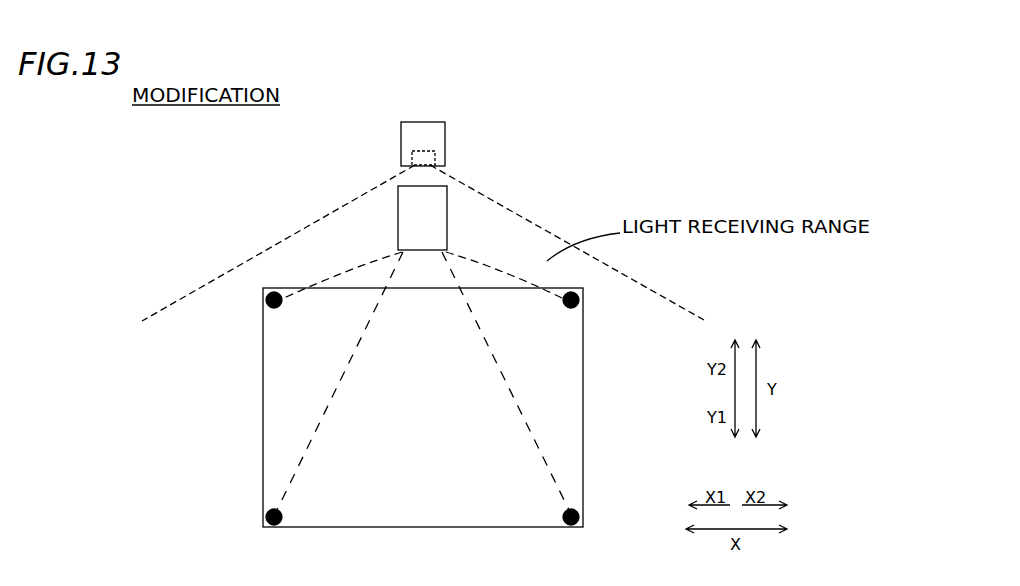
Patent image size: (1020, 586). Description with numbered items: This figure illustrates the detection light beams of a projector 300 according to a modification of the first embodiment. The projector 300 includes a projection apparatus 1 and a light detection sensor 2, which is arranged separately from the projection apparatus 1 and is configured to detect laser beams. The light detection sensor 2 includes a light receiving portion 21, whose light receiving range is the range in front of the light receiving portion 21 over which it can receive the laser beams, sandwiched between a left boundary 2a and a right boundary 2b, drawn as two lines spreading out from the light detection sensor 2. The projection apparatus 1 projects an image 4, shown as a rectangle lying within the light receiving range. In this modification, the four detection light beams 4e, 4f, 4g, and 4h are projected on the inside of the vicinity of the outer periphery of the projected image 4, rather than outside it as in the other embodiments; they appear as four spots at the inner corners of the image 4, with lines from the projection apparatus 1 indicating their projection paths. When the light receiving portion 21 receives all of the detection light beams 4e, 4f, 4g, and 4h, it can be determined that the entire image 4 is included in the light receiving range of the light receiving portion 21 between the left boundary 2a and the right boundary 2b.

The projection apparatus 1 is at (447, 219).
The light detection sensor 2 is at (430, 122).
The light receiving portion 21 is at (435, 157).
The left boundary 2a is at (323, 214).
The right boundary 2b is at (540, 217).
The projector 300 is at (533, 166).
The image 4 is at (565, 410).
The detection light beam 4e is at (266, 302).
The detection light beam 4f is at (579, 305).
The detection light beam 4g is at (267, 519).
The detection light beam 4h is at (580, 520).